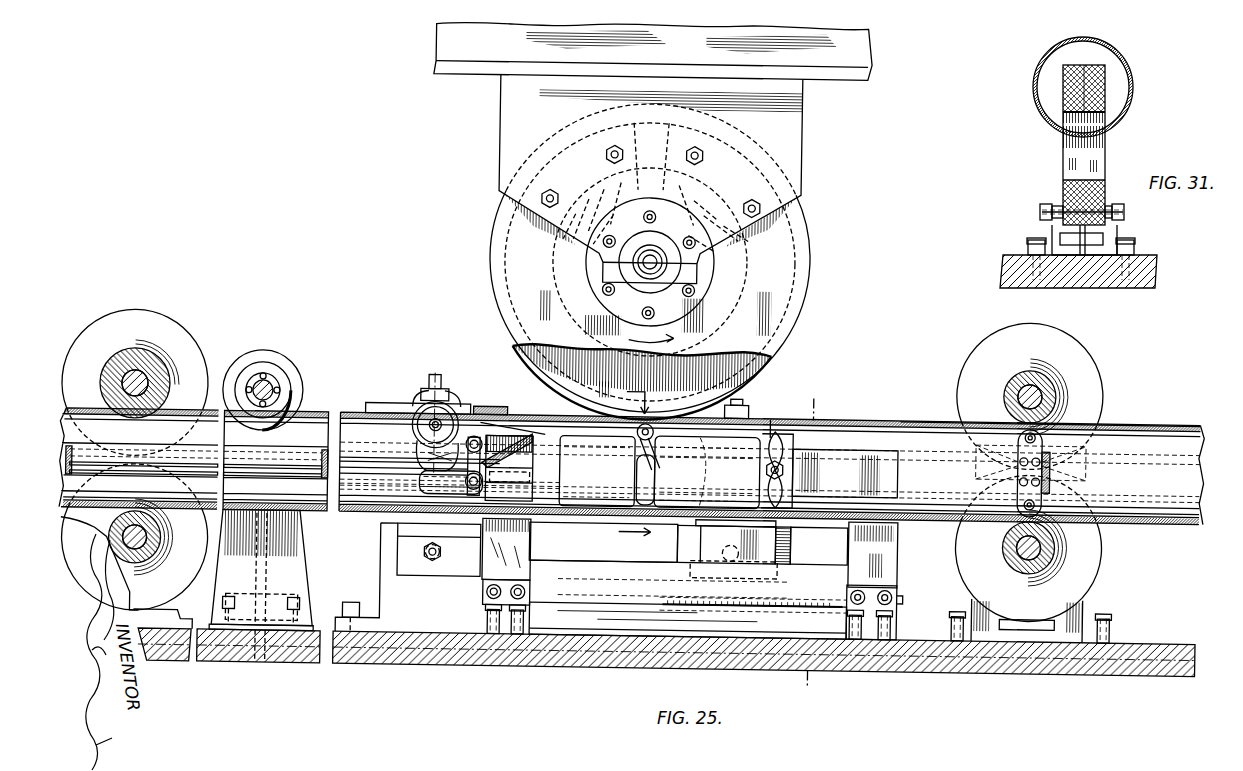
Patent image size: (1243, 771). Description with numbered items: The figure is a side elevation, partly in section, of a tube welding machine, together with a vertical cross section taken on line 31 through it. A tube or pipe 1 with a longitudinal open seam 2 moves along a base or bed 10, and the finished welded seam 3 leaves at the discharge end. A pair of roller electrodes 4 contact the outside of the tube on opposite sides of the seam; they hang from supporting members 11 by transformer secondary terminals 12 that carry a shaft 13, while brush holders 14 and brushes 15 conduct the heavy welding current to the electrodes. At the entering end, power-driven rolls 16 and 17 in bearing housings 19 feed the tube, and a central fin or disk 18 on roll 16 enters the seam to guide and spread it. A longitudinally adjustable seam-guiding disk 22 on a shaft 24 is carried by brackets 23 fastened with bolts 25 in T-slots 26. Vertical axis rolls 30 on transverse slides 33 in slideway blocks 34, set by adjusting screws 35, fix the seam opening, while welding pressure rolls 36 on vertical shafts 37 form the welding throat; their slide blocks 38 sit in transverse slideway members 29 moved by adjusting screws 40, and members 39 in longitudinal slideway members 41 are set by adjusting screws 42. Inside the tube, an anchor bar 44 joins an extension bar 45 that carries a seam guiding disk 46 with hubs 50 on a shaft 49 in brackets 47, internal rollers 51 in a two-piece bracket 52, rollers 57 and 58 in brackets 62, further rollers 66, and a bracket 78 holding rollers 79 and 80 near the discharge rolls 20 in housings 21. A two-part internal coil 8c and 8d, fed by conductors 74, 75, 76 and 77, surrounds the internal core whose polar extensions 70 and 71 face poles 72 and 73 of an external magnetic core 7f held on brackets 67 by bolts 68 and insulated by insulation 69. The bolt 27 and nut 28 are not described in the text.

In FIG. 25, the tube or pipe 1 is at (1190, 518).
In FIG. 31, the tube or pipe 1 is at (1132, 102).
In FIG. 25, the longitudinal open seam 2 is at (88, 417).
In FIG. 25, the welded seam 3 is at (860, 418).
In FIG. 31, the welded seam 3 is at (1090, 40).
In FIG. 25, the roller electrodes 4 is at (796, 310).
In FIG. 25, the external magnetic core 7f is at (687, 620).
In FIG. 31, the external magnetic core 7f is at (1063, 186).
In FIG. 25, the front coil 8c is at (603, 538).
In FIG. 25, the rear coil 8d is at (726, 542).
In FIG. 25, the base or bed 10 is at (276, 670).
In FIG. 31, the base or bed 10 is at (1157, 280).
In FIG. 25, the supporting members 11 is at (852, 42).
In FIG. 25, the transformer secondary terminals 12 is at (798, 136).
In FIG. 25, the shaft 13 is at (705, 266).
In FIG. 25, the brush holders 14 is at (537, 198).
In FIG. 25, the brushes 15 is at (568, 246).
In FIG. 25, the roll 16 is at (176, 322).
In FIG. 25, the roll 17 is at (192, 572).
In FIG. 25, the central fin or disk 18 is at (130, 356).
In FIG. 25, the bearing housings 19 is at (182, 670).
In FIG. 25, the rolls 20 is at (1100, 370).
In FIG. 25, the housings 21 is at (1100, 608).
In FIG. 25, the seam-guiding disk 22 is at (254, 357).
In FIG. 25, the brackets 23 is at (306, 578).
In FIG. 25, the shaft 24 is at (270, 384).
In FIG. 25, the bolts 25 is at (264, 610).
In FIG. 25, the T-slots 26 is at (256, 668).
In FIG. 25, the bolt 27 is at (436, 384).
In FIG. 25, the nut 28 is at (467, 398).
In FIG. 25, the transverse slideway members 29 is at (636, 460).
In FIG. 25, the vertical axis rolls 30 is at (372, 406).
In FIG. 25, the section line 31 is at (804, 394).
In FIG. 25, the transverse slides 33 is at (436, 582).
In FIG. 25, the slideway blocks or housings 34 is at (396, 670).
In FIG. 25, the adjusting screws 35 is at (400, 564).
In FIG. 25, the welding pressure rolls 36 is at (750, 416).
In FIG. 25, the vertical shafts 37 is at (748, 400).
In FIG. 25, the slide blocks 38 is at (788, 549).
In FIG. 25, the members 39 is at (812, 541).
In FIG. 25, the adjusting screws 40 is at (692, 572).
In FIG. 25, the longitudinal slideway members 41 is at (604, 640).
In FIG. 25, the adjusting screws 42 is at (640, 640).
In FIG. 25, the anchor bar or rod 44 is at (118, 458).
In FIG. 25, the extension bar or plate 45 is at (914, 416).
In FIG. 31, the extension bar or plate 45 is at (1105, 76).
In FIG. 25, the seam guiding disk 46 is at (424, 404).
In FIG. 25, the brackets 47 is at (426, 490).
In FIG. 25, the shaft 49 is at (415, 431).
In FIG. 25, the hubs or roller extensions 50 is at (430, 425).
In FIG. 25, the internal rollers 51 is at (476, 410).
In FIG. 25, the two-piece bracket 52 is at (900, 612).
In FIG. 25, the internal roller 57 is at (650, 425).
In FIG. 25, the internal rollers 58 is at (640, 474).
In FIG. 25, the brackets 62 is at (656, 466).
In FIG. 25, the internal rollers 66 is at (788, 440).
In FIG. 25, the brackets 67 is at (508, 670).
In FIG. 31, the brackets 67 is at (1028, 243).
In FIG. 25, the bolts 68 is at (486, 594).
In FIG. 31, the bolts 68 is at (1040, 212).
In FIG. 25, the insulation 69 is at (840, 458).
In FIG. 31, the insulation 69 is at (1063, 83).
In FIG. 25, the polar extension 70 is at (532, 486).
In FIG. 25, the polar extension 71 is at (856, 500).
In FIG. 31, the polar extension 71 is at (1063, 118).
In FIG. 25, the pole 72 is at (530, 543).
In FIG. 25, the pole 73 is at (899, 540).
In FIG. 31, the pole 73 is at (1063, 150).
In FIG. 25, the conductor 74 is at (532, 472).
In FIG. 25, the conductor 75 is at (506, 456).
In FIG. 25, the conductor 76 is at (534, 470).
In FIG. 25, the conductor 77 is at (536, 434).
In FIG. 25, the bracket 78 is at (1050, 450).
In FIG. 25, the internal roller 79 is at (1038, 432).
In FIG. 25, the internal roller 80 is at (1038, 500).